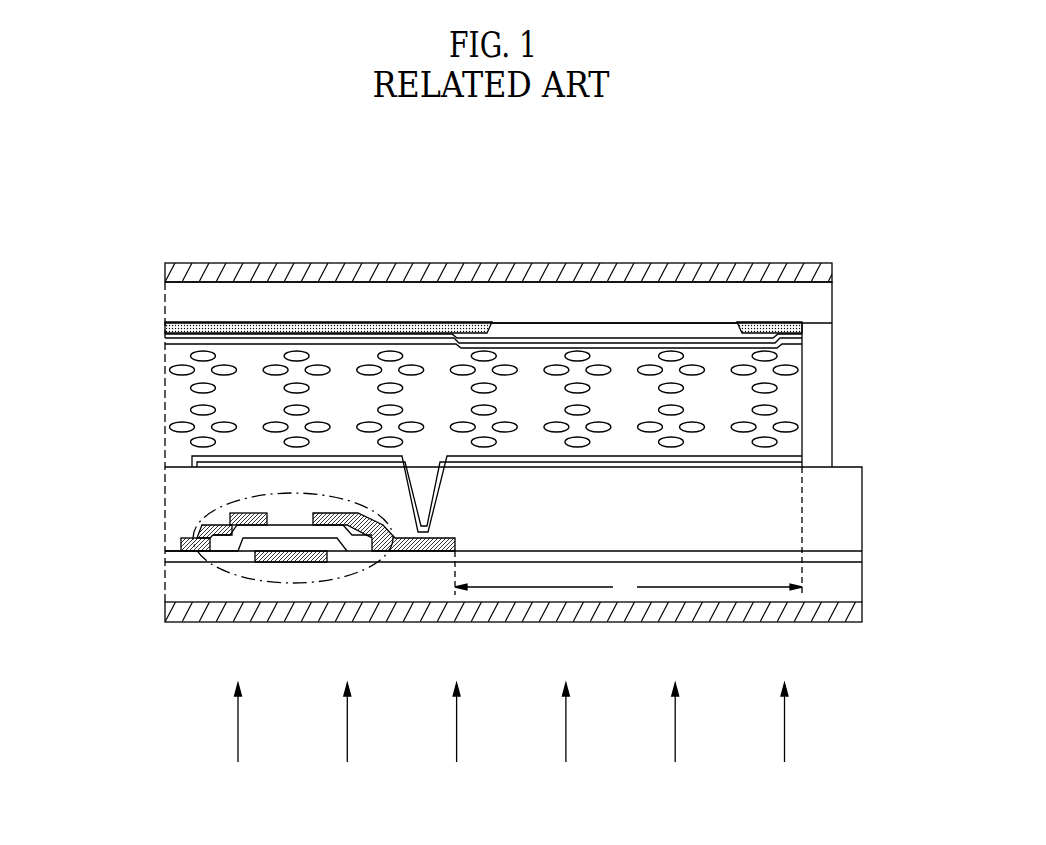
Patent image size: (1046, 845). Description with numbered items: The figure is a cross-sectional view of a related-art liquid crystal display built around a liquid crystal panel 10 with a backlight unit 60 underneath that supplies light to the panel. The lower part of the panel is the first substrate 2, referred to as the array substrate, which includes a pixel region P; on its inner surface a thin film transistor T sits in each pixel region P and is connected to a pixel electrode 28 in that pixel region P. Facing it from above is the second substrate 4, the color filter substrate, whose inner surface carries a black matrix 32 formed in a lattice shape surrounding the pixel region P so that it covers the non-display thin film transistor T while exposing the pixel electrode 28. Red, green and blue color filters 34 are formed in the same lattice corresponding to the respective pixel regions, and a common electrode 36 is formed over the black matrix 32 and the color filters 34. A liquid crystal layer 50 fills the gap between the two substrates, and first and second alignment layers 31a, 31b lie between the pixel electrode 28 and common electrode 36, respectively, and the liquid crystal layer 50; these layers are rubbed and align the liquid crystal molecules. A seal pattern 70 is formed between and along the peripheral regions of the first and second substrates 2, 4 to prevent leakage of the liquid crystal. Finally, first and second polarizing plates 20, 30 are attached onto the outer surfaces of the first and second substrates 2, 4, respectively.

The liquid crystal panel 10 is at (842, 193).
The second polarizing plate 30 is at (727, 263).
The second substrate 4 is at (825, 303).
The black matrix 32 is at (165, 322).
The color filters 34 is at (597, 328).
The common electrode 36 is at (165, 335).
The second alignment layer 31b is at (802, 329).
The liquid crystal layer 50 is at (167, 393).
The seal pattern 70 is at (815, 378).
The first alignment layer 31a is at (802, 452).
The pixel electrode 28 is at (555, 465).
The first substrate 2 is at (855, 585).
The first polarizing plate 20 is at (828, 618).
The thin film transistor T is at (213, 565).
The pixel region P is at (628, 533).
The backlight unit 60 is at (512, 741).